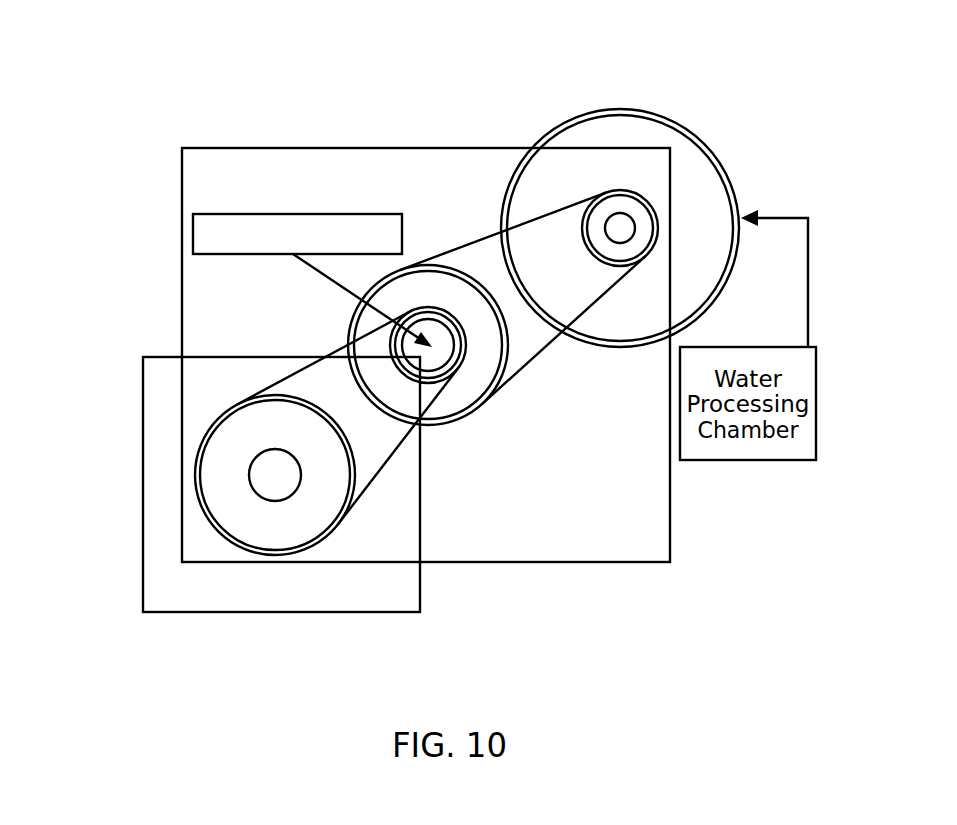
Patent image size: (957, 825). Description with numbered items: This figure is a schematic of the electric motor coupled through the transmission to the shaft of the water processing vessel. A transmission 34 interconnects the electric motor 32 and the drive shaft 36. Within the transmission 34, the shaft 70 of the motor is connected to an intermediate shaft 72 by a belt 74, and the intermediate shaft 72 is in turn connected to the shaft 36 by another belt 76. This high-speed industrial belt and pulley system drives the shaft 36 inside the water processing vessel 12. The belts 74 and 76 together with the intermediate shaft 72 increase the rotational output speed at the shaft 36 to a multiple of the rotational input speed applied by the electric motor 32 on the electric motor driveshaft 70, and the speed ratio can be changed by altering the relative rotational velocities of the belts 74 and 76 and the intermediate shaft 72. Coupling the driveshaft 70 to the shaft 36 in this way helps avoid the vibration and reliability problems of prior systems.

The water processing vessel 12 is at (638, 223).
The electric motor 32 is at (251, 484).
The transmission 34 is at (426, 334).
The drive shaft 36 is at (539, 142).
The electric motor driveshaft 70 is at (358, 509).
The intermediate shaft 72 is at (441, 411).
The belt 74 is at (292, 396).
The belt 76 is at (570, 360).